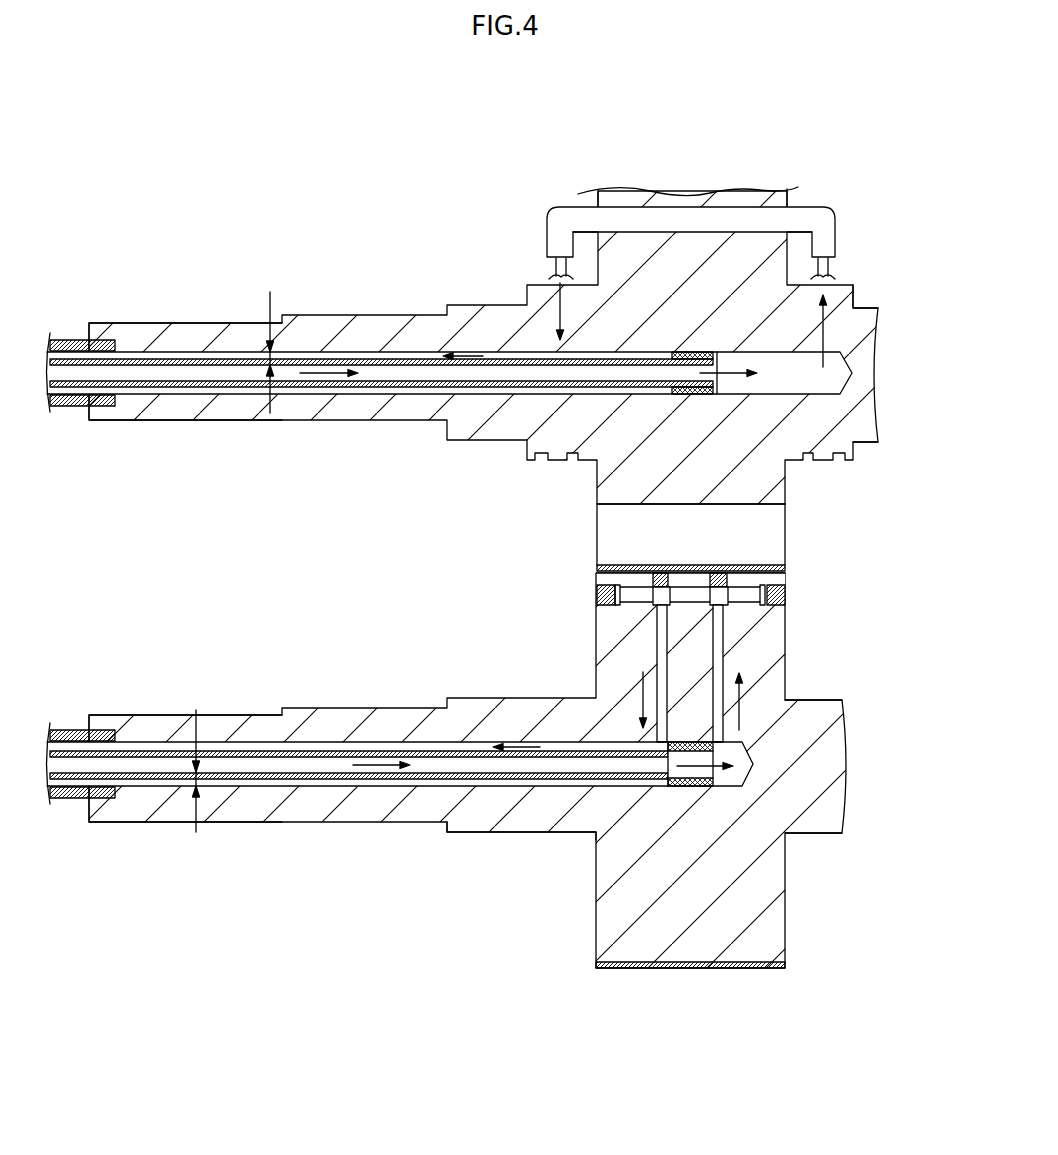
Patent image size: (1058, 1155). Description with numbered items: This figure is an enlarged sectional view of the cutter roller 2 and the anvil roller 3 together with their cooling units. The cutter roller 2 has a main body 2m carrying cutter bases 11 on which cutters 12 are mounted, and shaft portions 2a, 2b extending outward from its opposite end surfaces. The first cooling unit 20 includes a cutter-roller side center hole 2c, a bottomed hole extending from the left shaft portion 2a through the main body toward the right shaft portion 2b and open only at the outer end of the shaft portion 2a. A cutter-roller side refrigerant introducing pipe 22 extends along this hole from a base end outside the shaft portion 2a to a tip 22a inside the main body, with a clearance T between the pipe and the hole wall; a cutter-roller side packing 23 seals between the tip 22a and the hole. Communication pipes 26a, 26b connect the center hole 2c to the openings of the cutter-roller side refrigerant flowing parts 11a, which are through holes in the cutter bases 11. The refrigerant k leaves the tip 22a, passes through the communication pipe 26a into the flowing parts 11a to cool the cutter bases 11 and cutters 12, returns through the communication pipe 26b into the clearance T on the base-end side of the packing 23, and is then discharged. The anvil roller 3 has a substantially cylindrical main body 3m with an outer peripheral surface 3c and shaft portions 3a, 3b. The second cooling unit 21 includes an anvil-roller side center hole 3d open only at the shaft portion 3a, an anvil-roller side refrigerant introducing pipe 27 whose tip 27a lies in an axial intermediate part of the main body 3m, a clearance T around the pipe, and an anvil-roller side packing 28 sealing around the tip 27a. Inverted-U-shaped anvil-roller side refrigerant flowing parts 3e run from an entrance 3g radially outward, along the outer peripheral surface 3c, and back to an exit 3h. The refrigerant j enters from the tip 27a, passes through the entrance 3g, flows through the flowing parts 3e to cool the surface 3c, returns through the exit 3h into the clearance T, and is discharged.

The cutter roller 2 is at (845, 297).
The shaft portion 2a is at (180, 333).
The shaft portion 2b is at (867, 433).
The cutter-roller side center hole 2c is at (310, 355).
The main body 2m is at (768, 483).
The anvil roller 3 is at (767, 912).
The shaft portion 3a is at (130, 802).
The shaft portion 3b is at (817, 822).
The outer peripheral surface 3c is at (640, 563).
The anvil-roller side center hole 3d is at (248, 782).
The anvil-roller side refrigerant flowing part 3e is at (721, 638).
The entrance 3g is at (750, 740).
The exit 3h is at (653, 738).
The main body 3m is at (757, 937).
The cutter base 11 is at (690, 200).
The cutter-roller side refrigerant flowing part 11a is at (640, 218).
The cutter 12 is at (622, 188).
The first cooling unit 20 is at (488, 397).
The second cooling unit 21 is at (486, 787).
The cutter-roller side refrigerant introducing pipe 22 is at (397, 360).
The tip 22a is at (713, 367).
The cutter-roller side packing 23 is at (693, 352).
The communication pipe 26a is at (815, 207).
The communication pipe 26b is at (564, 213).
The anvil-roller side refrigerant introducing pipe 27 is at (327, 782).
The tip 27a is at (753, 760).
The anvil-roller side packing 28 is at (596, 838).
The clearance T is at (268, 352).
The refrigerant j is at (517, 742).
The refrigerant k is at (560, 315).